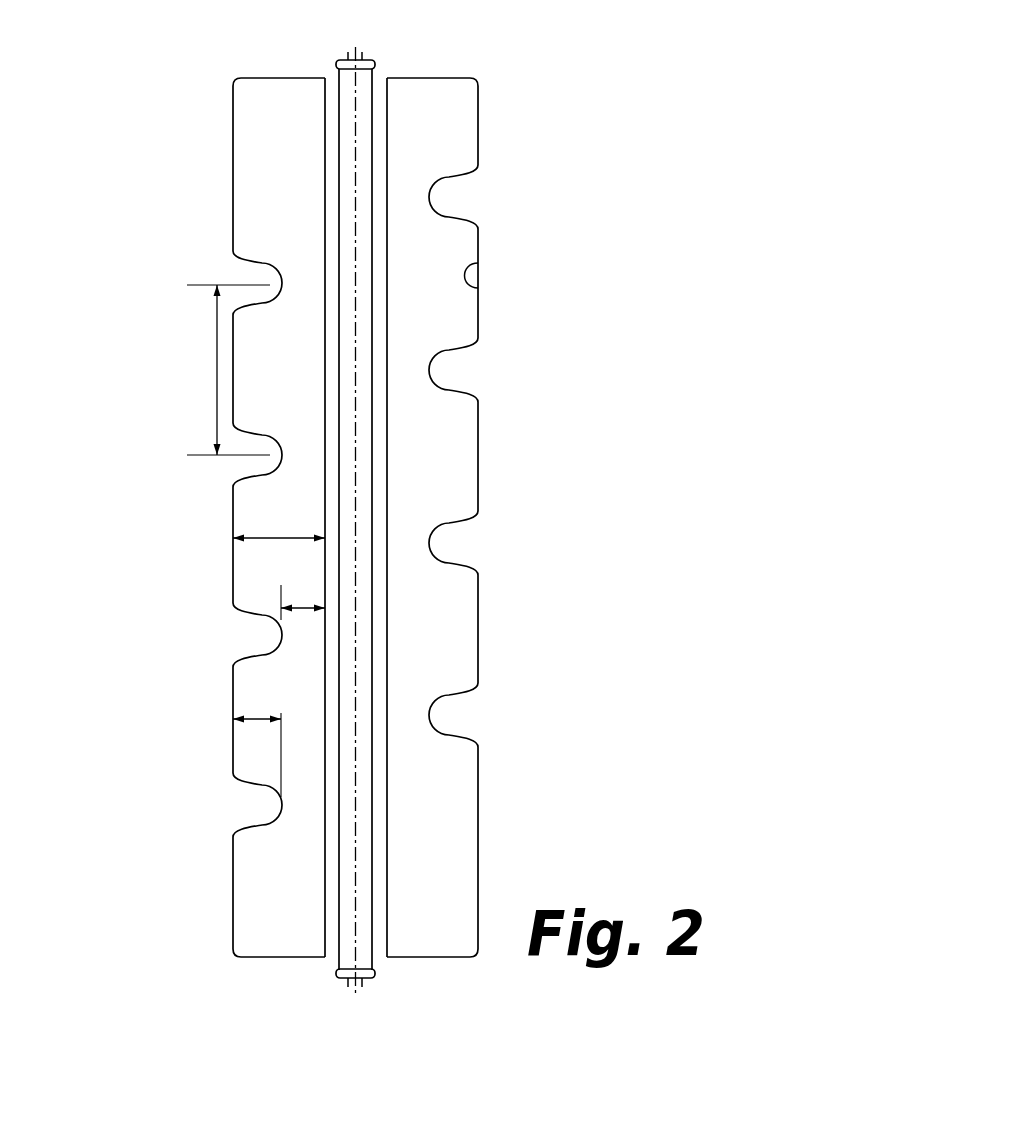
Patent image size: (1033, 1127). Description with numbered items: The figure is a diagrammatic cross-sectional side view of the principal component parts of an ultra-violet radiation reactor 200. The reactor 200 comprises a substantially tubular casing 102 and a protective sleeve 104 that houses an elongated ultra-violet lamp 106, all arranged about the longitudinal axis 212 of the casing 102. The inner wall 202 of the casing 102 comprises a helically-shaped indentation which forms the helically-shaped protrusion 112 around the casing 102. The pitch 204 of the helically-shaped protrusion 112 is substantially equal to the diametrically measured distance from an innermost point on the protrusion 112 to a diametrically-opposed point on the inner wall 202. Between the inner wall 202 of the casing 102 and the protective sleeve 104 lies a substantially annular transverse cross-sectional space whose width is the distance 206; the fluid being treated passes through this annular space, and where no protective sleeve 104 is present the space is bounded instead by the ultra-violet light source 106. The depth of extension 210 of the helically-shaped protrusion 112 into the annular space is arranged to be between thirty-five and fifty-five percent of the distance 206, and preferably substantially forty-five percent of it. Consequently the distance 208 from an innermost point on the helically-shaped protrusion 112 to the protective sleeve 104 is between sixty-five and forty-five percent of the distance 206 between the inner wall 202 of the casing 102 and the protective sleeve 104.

The ultra-violet radiation reactor 200 is at (407, 499).
The casing 102 is at (478, 125).
The protective sleeve 104 is at (387, 440).
The ultra-violet lamp 106 is at (372, 671).
The helically-shaped protrusion 112 is at (428, 541).
The inner wall 202 is at (478, 288).
The pitch 204 is at (217, 378).
The distance 206 is at (278, 540).
The distance 208 is at (293, 610).
The depth of extension 210 is at (258, 722).
The longitudinal axis 212 is at (356, 793).